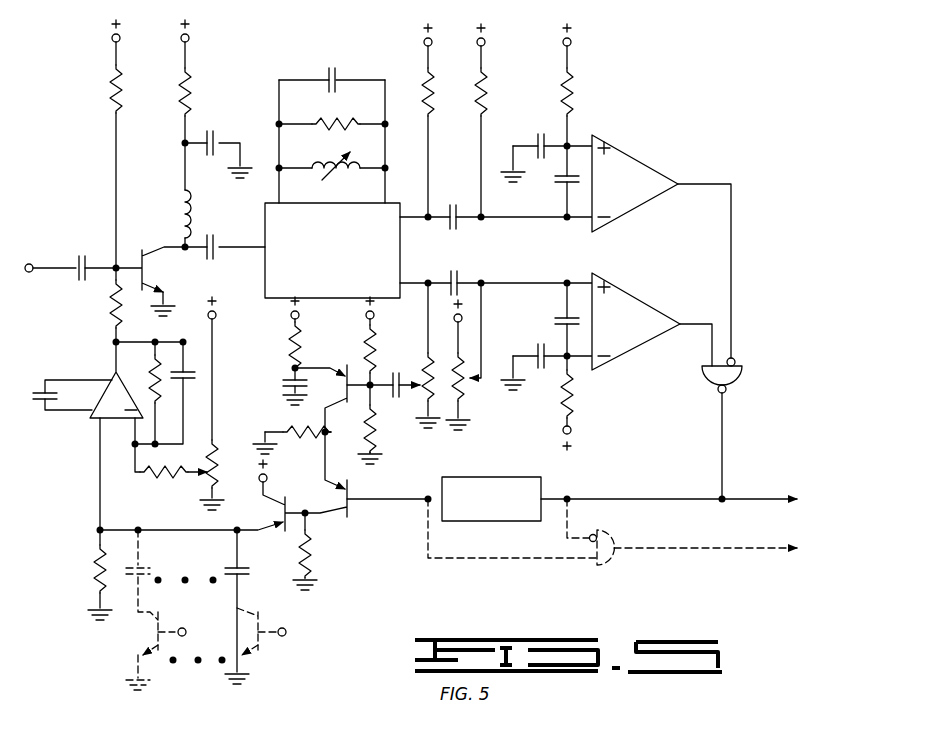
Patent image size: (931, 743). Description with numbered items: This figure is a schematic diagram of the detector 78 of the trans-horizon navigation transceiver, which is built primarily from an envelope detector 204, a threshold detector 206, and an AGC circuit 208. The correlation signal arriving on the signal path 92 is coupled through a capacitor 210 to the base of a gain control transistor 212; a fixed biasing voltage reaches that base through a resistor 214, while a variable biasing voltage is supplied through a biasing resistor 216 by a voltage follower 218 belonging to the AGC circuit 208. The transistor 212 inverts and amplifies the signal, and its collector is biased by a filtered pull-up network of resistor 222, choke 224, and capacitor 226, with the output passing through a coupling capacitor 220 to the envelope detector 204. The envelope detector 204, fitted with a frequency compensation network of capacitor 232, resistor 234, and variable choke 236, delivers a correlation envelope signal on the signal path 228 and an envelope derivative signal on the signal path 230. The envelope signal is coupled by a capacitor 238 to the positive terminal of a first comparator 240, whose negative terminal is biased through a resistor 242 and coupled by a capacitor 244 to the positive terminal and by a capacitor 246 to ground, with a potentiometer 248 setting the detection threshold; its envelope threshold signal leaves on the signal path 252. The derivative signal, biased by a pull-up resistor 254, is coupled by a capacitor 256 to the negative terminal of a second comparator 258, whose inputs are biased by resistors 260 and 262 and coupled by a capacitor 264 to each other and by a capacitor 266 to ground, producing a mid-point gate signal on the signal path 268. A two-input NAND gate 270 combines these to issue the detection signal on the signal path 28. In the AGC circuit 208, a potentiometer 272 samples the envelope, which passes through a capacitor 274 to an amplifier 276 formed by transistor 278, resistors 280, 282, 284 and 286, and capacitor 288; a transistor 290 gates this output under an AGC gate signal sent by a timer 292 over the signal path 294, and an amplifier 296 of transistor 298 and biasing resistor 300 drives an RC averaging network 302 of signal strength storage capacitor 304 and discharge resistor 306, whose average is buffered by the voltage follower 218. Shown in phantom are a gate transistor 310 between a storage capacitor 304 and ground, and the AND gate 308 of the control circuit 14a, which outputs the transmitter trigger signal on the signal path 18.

The detector 78 is at (84, 52).
The resistor 214 is at (110, 78).
The resistor 222 is at (196, 86).
The capacitor 226 is at (216, 136).
The choke 224 is at (180, 212).
The coupling capacitor 220 is at (217, 236).
The signal path 92 is at (55, 262).
The capacitor 210 is at (78, 256).
The gain control transistor 212 is at (161, 281).
The biasing resistor 216 is at (110, 294).
The voltage follower 218 is at (104, 372).
The envelope detector 204 is at (264, 274).
The capacitor 232 is at (326, 70).
The resistor 234 is at (340, 120).
The variable choke 236 is at (330, 160).
The signal path 230 is at (405, 224).
The pull-up resistor 254 is at (440, 106).
The capacitor 256 is at (450, 204).
The resistor 260 is at (490, 84).
The resistor 262 is at (576, 96).
The capacitor 266 is at (538, 132).
The capacitor 264 is at (556, 184).
The threshold detector 206 is at (640, 116).
The second comparator 258 is at (638, 158).
The signal path 268 is at (705, 184).
The signal path 228 is at (406, 292).
The capacitor 238 is at (462, 280).
The capacitor 244 is at (560, 316).
The capacitor 246 is at (538, 350).
The resistor 242 is at (578, 402).
The first comparator 240 is at (634, 294).
The signal path 252 is at (690, 318).
The two-input NAND gate 270 is at (712, 386).
The signal path 28 is at (730, 430).
The potentiometer 272 is at (422, 338).
The potentiometer 248 is at (466, 394).
The resistor 284 is at (300, 338).
The capacitor 288 is at (298, 368).
The amplifier 276 is at (292, 404).
The transistor 278 is at (354, 372).
The resistor 280 is at (365, 324).
The resistor 282 is at (366, 432).
The capacitor 274 is at (394, 400).
The resistor 286 is at (283, 440).
The transistor 290 is at (352, 486).
The signal path 294 is at (362, 500).
The amplifier 296 is at (333, 522).
The timer 292 is at (484, 476).
The AGC circuit 208 is at (418, 568).
The transistor 298 is at (280, 512).
The biasing resistor 300 is at (300, 560).
The discharge resistor 306 is at (92, 560).
The signal strength storage capacitor 304 is at (234, 568).
The gate transistor 310 is at (250, 622).
The RC averaging network 302 is at (292, 610).
The control circuit 14a is at (590, 574).
The AND gate 308 is at (614, 564).
The signal path 18 is at (716, 548).